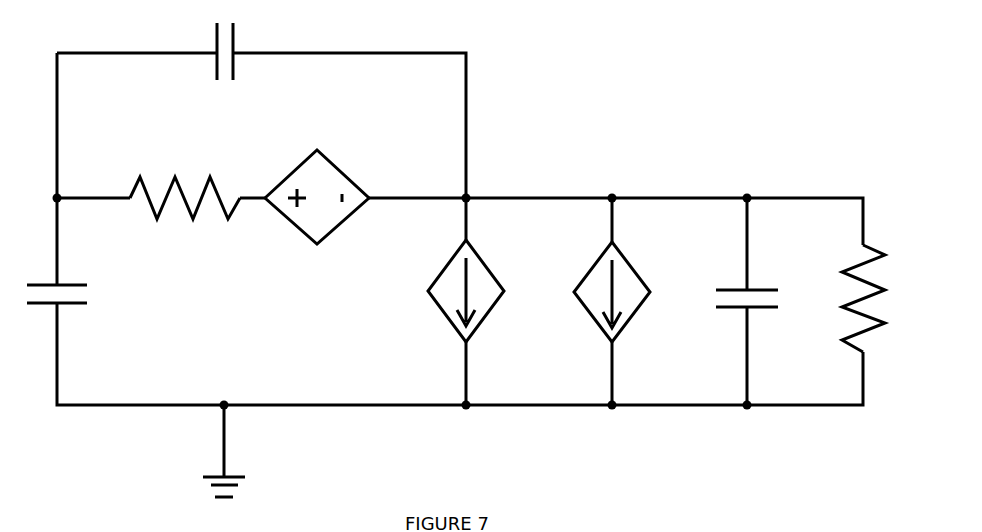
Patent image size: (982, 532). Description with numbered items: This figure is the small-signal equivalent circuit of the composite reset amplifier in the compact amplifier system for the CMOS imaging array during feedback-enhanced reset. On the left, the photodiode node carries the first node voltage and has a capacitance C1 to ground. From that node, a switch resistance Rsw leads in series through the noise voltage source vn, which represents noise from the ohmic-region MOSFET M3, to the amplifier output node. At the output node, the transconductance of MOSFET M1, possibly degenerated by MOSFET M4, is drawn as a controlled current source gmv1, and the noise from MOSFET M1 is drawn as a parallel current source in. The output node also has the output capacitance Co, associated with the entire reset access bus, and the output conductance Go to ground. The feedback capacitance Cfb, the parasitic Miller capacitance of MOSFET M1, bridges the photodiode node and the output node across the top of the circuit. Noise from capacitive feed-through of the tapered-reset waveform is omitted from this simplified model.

The feedback capacitance Cfb is at (227, 78).
The switch resistance Rsw is at (185, 218).
The voltage source vn is at (317, 215).
The current source in is at (455, 291).
The controlled current source gmv1 is at (578, 292).
The output capacitance Co is at (726, 300).
The output conductance Go is at (842, 298).
The photodiode node capacitance C1 is at (79, 299).